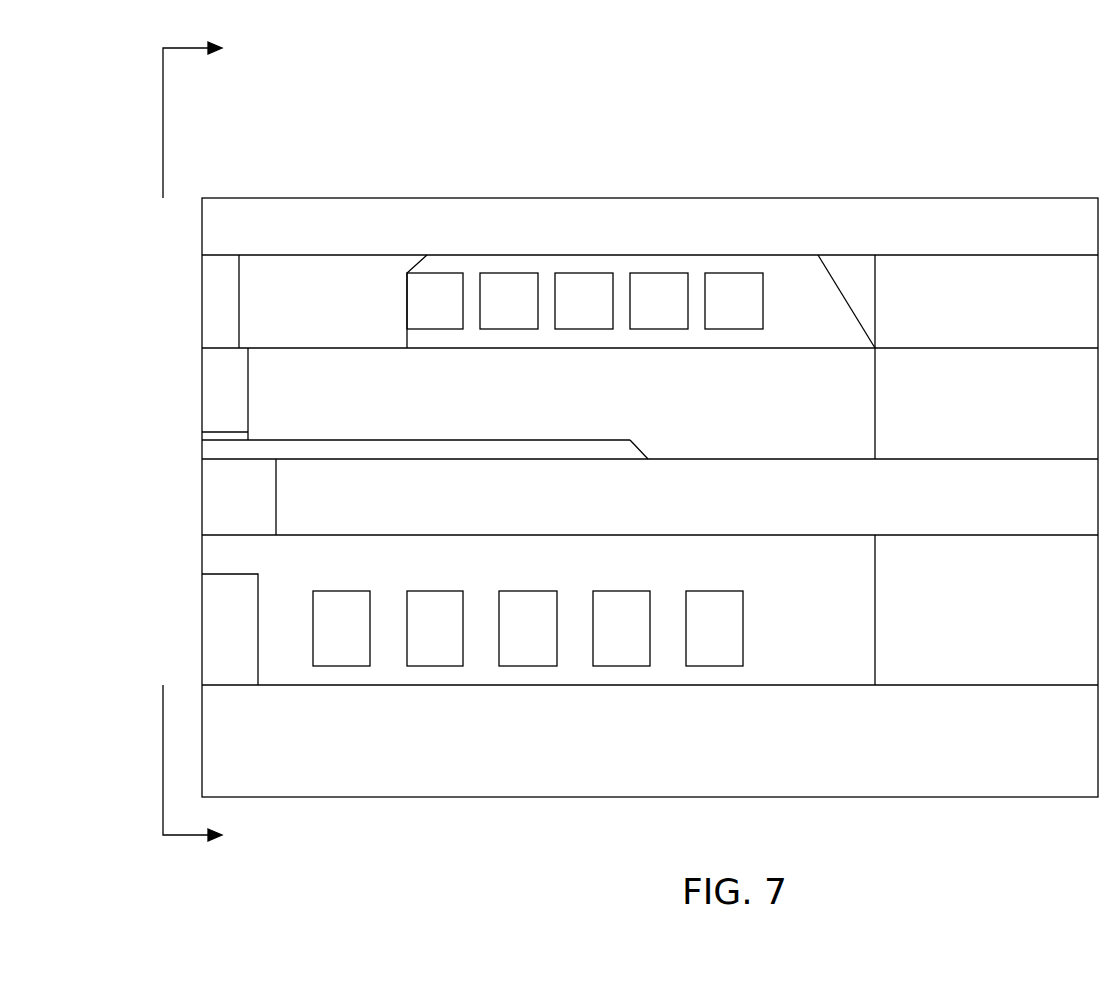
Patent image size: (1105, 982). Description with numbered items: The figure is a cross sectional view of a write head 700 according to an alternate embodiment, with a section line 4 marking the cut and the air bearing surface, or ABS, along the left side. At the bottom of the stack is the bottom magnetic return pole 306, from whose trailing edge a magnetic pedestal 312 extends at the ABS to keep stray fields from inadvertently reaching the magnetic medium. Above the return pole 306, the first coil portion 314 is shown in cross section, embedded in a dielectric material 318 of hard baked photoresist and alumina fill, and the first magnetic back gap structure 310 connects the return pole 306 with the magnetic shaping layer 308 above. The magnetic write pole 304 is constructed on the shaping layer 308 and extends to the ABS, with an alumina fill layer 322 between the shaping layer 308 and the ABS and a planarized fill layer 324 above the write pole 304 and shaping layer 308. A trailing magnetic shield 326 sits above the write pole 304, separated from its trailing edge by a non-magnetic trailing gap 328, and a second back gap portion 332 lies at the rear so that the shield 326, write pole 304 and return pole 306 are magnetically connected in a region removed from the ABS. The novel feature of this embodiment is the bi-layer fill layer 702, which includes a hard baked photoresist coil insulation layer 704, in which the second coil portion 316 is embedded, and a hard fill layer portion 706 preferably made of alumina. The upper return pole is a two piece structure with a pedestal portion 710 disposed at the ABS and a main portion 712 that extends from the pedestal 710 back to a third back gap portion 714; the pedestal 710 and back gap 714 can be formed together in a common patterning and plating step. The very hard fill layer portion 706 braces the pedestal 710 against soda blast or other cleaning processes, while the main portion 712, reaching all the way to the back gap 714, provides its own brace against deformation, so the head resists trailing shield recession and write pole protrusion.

The section line 4- 4 is at (204, 441).
The write head 700 is at (522, 162).
The bi-layer fill layer 702 is at (537, 254).
The hard baked photoresist coil insulation layer 704 is at (830, 299).
The hard fill layer portion 706 is at (357, 305).
The pedestal portion 710 is at (214, 299).
The main portion 712 is at (692, 227).
The third back gap portion 714 is at (1010, 302).
The magnetic write pole 304 is at (522, 451).
The bottom magnetic return pole 306 is at (654, 734).
The magnetic shaping layer 308 is at (650, 509).
The first magnetic back gap structure 310 is at (1012, 607).
The magnetic pedestal 312 is at (210, 629).
The first coil portion 314 is at (528, 628).
The second coil portion 316 is at (585, 301).
The dielectric material 318 is at (590, 563).
The alumina fill layer 322 is at (212, 495).
The planarized fill layer 324 is at (680, 388).
The trailing magnetic shield 326 is at (216, 388).
The trailing gap 328 is at (206, 434).
The second back gap portion 332 is at (1020, 411).
The air bearing surface ABS is at (200, 556).